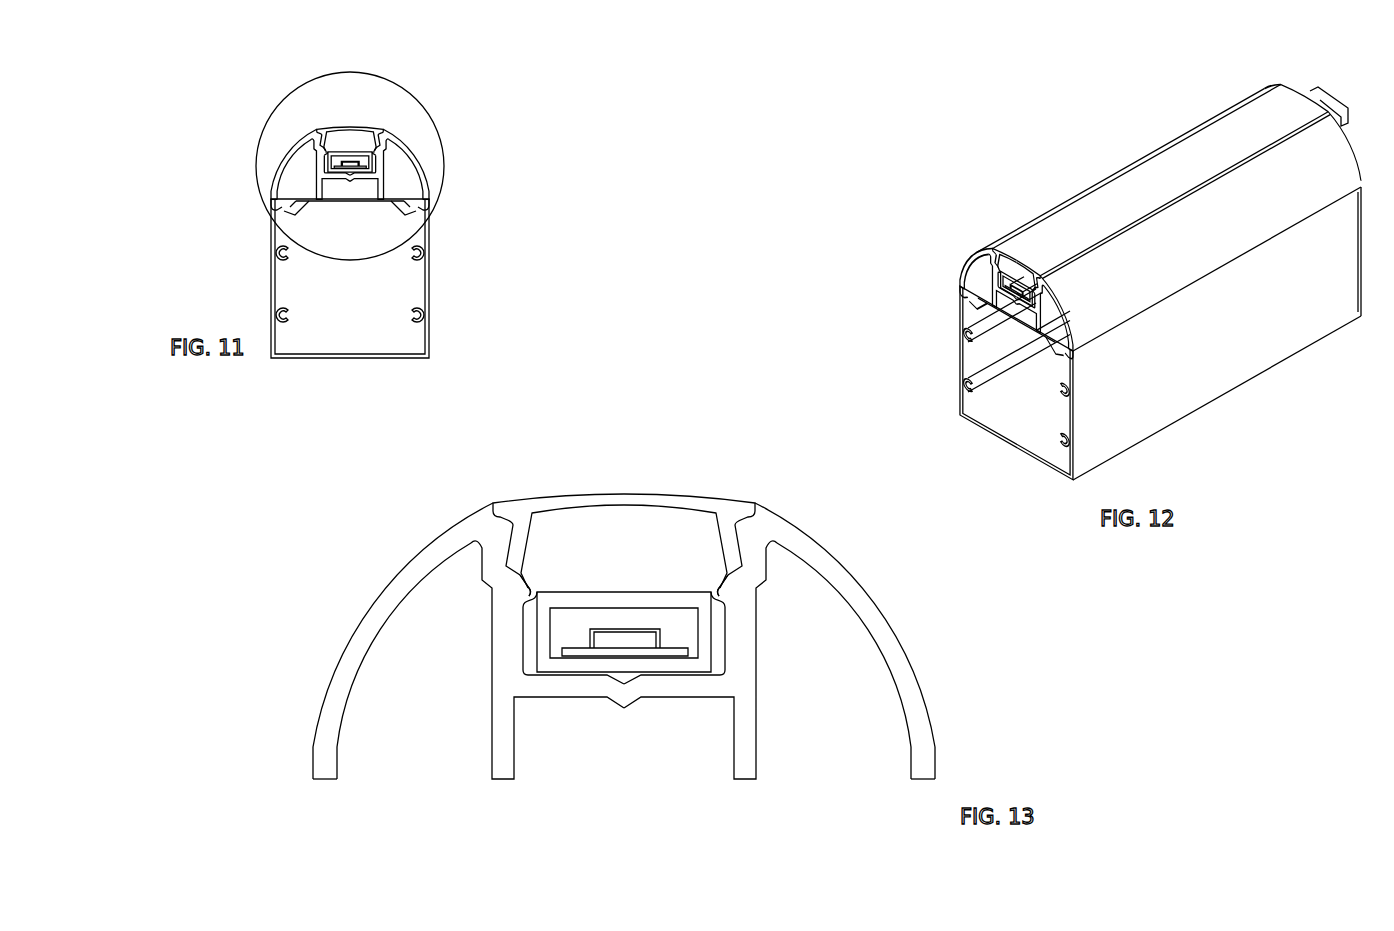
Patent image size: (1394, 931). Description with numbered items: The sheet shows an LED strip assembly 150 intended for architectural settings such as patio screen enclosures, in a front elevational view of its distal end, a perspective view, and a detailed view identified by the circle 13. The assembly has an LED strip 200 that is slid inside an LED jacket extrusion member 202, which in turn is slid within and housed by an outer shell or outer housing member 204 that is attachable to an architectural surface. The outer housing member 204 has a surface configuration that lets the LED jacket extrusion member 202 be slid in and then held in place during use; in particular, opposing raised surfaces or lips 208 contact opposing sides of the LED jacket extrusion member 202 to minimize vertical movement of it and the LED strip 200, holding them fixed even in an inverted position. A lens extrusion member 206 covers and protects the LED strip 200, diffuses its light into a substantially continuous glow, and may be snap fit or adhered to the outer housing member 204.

In FIG. 11, the detail view circle (FIG. 13) 13 is at (399, 87).
In FIG. 11, the LED strip assembly 150 is at (256, 117).
In FIG. 12, the LED strip assembly 150 is at (977, 117).
In FIG. 13, the LED strip 200 is at (627, 630).
In FIG. 12, the LED jacket extrusion member 202 is at (993, 286).
In FIG. 13, the LED jacket extrusion member 202 is at (538, 637).
In FIG. 13, the outer housing member 204 is at (350, 633).
In FIG. 13, the lens extrusion member 206 is at (669, 495).
In FIG. 13, the lips 208 is at (530, 591).